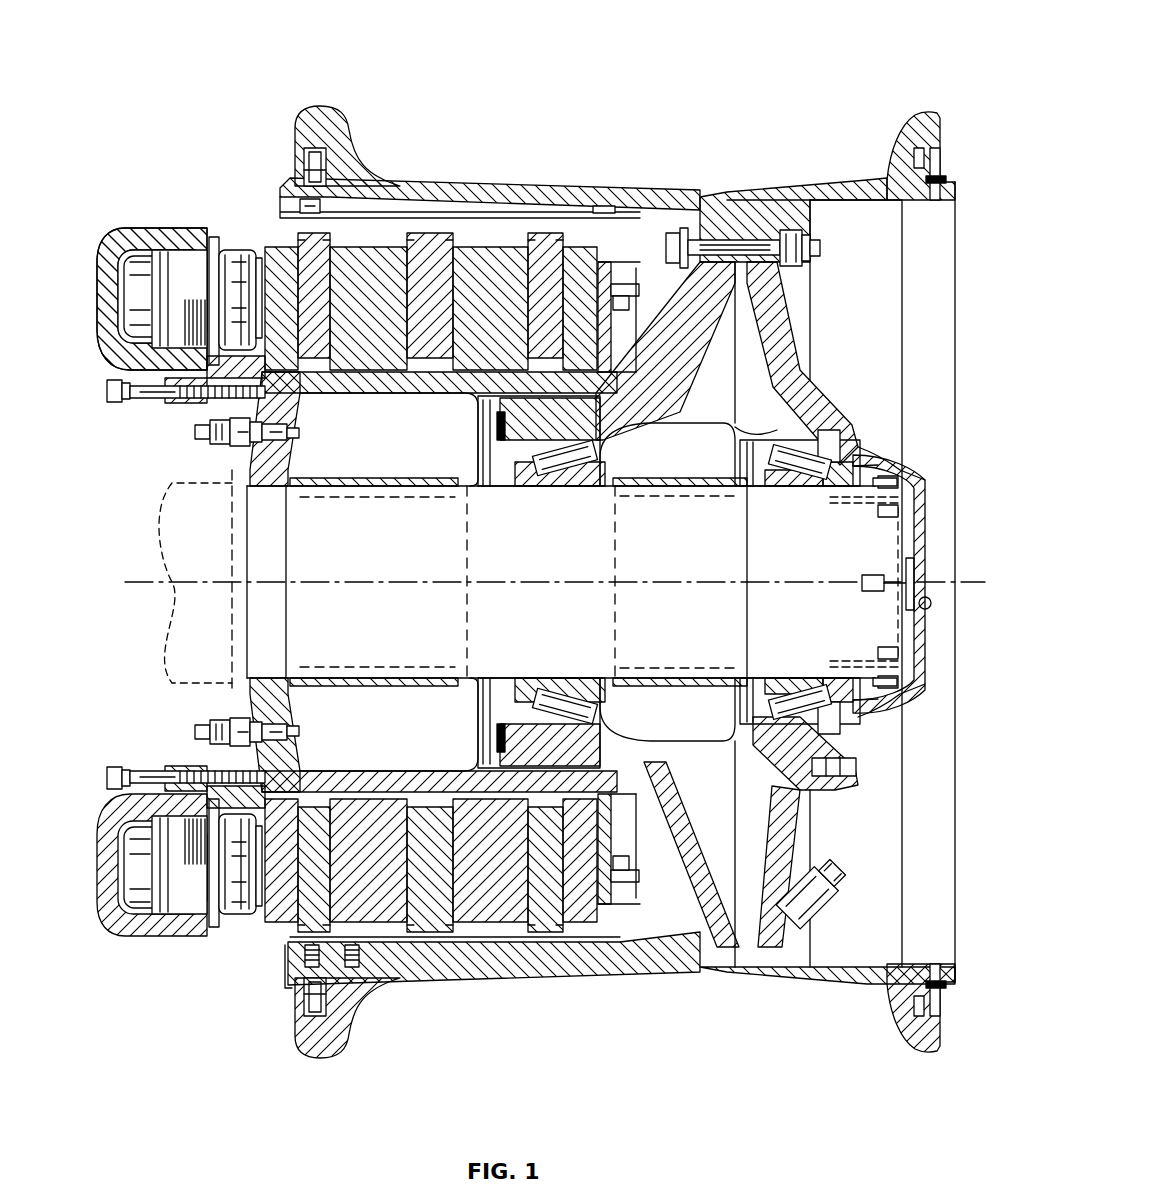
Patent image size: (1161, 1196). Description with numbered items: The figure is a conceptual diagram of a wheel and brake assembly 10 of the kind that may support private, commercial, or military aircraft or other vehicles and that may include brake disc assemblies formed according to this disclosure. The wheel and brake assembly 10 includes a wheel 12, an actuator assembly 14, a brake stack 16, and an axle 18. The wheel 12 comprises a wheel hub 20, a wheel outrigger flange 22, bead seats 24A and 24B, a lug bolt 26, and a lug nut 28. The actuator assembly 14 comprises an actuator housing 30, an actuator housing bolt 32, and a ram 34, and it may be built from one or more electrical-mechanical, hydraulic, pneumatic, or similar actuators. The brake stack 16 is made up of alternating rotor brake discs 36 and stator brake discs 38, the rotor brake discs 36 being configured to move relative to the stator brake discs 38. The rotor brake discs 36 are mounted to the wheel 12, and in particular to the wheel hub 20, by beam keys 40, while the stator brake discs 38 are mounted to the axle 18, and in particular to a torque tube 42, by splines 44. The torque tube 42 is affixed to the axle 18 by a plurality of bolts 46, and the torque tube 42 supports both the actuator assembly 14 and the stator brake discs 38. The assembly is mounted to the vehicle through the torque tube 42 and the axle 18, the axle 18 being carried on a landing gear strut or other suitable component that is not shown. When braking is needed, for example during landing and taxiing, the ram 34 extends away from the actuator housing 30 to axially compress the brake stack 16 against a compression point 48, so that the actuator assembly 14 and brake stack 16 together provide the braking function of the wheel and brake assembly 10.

The wheel and brake assembly 10 is at (744, 58).
The wheel 12 is at (716, 576).
The actuator assembly 14 is at (349, 300).
The brake stack 16 is at (368, 878).
The axle 18 is at (557, 551).
The wheel hub 20 is at (475, 579).
The wheel outrigger flange 22 is at (804, 186).
The bead seat 24A is at (888, 138).
The bead seat 24B is at (352, 136).
The lug bolt 26 is at (752, 235).
The lug nut 28 is at (820, 248).
The actuator housing 30 is at (100, 292).
The actuator housing bolt 32 is at (118, 402).
The ram 34 is at (262, 250).
The rotor brake discs 36 is at (390, 937).
The stator brake discs 38 is at (427, 907).
The beam keys 40 is at (575, 937).
The torque tube 42 is at (382, 395).
The splines 44 is at (392, 790).
The bolts 46 is at (222, 732).
The compression point 48 is at (610, 266).